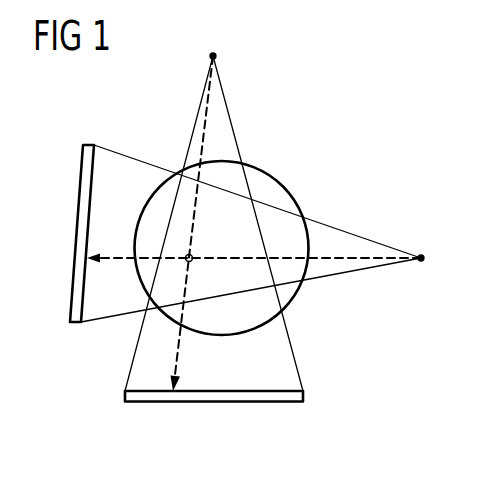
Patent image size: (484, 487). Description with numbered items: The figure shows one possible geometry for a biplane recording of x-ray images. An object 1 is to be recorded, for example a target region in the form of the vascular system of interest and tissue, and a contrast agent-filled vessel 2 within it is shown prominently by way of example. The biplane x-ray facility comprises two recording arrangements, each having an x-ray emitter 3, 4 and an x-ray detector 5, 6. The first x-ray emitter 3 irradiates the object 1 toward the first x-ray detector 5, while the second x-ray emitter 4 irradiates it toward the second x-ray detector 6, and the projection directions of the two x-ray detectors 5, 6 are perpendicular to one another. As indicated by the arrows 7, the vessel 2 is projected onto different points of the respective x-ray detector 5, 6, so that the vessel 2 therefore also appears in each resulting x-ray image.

The object 1 is at (283, 185).
The contrast agent-filled vessel 2 is at (189, 256).
The x-ray emitter 3 is at (213, 56).
The x-ray emitter 4 is at (421, 256).
The x-ray detector 5 is at (238, 402).
The x-ray detector 6 is at (83, 190).
The arrows 7 is at (207, 105).